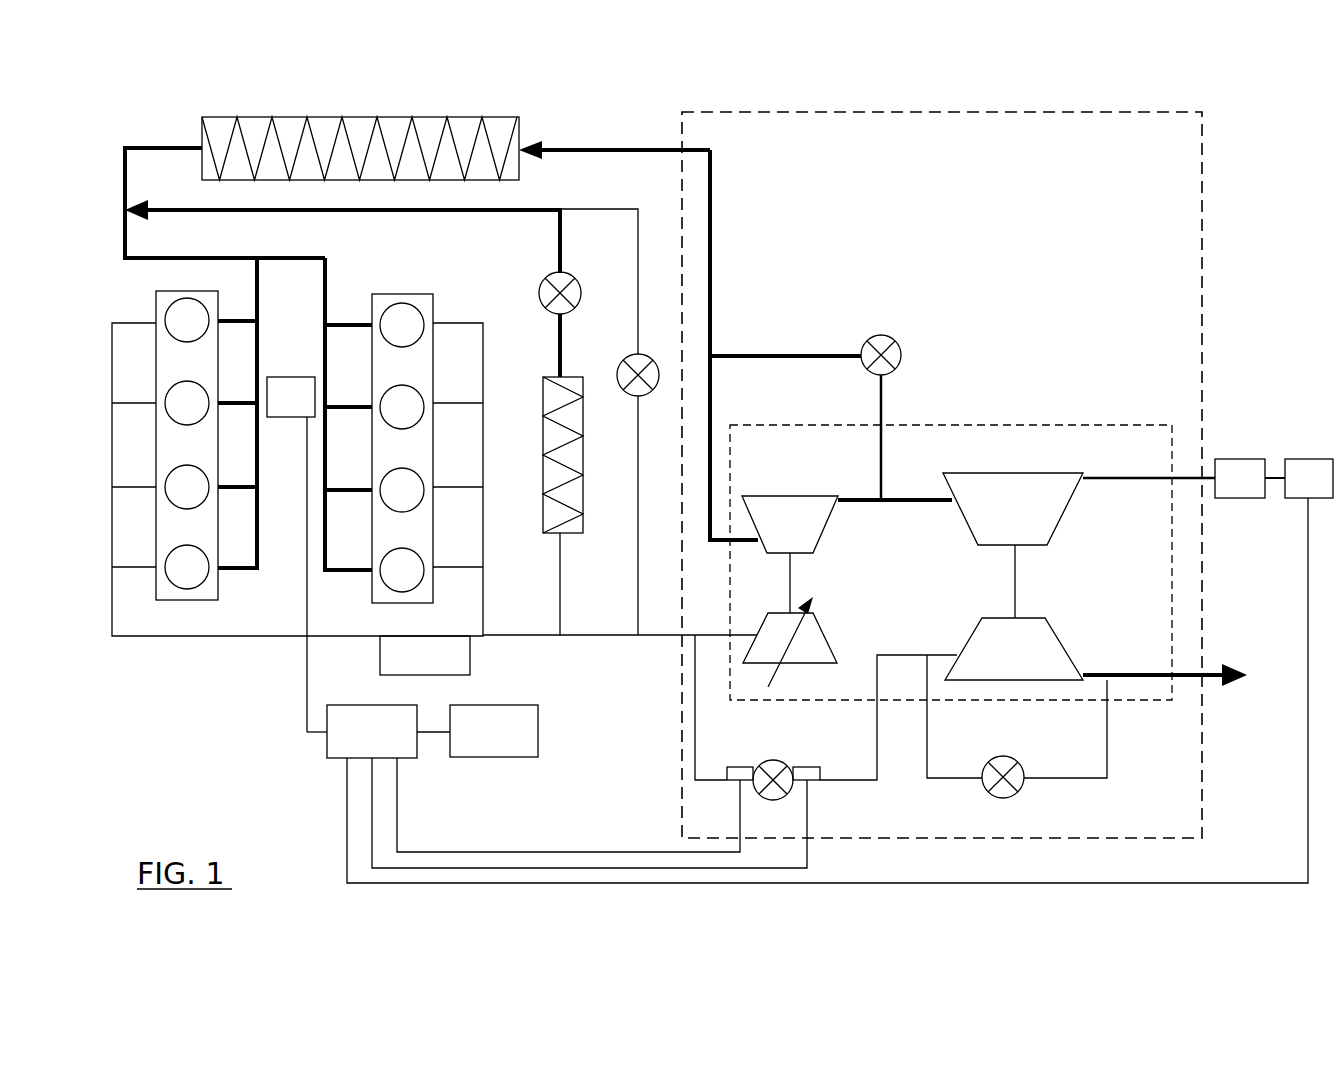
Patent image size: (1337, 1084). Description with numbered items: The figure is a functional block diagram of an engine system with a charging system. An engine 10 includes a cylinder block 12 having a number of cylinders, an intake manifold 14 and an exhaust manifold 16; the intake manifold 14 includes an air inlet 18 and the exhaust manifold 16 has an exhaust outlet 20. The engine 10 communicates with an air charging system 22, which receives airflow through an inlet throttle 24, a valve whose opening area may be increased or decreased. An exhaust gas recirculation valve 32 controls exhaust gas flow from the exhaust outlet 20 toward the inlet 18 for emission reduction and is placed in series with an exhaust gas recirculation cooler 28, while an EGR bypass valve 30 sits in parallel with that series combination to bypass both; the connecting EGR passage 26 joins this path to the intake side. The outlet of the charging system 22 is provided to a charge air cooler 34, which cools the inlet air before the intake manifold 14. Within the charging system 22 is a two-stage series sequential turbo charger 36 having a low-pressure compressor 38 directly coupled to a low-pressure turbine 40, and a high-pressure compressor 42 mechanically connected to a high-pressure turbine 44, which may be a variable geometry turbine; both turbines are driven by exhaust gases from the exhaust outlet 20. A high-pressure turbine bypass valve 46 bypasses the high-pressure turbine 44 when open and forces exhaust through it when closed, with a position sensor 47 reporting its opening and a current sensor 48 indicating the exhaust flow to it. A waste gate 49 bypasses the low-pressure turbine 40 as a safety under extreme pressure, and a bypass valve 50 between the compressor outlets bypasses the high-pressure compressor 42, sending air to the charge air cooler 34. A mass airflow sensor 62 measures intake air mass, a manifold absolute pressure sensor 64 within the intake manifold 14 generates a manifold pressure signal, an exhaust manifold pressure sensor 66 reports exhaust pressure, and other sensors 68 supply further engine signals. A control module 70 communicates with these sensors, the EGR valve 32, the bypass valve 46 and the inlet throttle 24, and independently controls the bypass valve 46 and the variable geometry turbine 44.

The engine 10 is at (136, 668).
The cylinder block 12 is at (156, 292).
The intake manifold 14 is at (304, 258).
The exhaust manifold 16 is at (112, 350).
The air inlet 18 is at (184, 258).
The exhaust outlet 20 is at (525, 635).
The air charging system 22 is at (918, 112).
The inlet throttle 24 is at (1238, 459).
The EGR line 26 is at (564, 240).
The exhaust gas recirculation cooler 28 is at (575, 535).
The EGR bypass valve 30 is at (647, 355).
The exhaust gas recirculation valve 32 is at (581, 293).
The charge air cooler 34 is at (437, 117).
The two-stage series sequential turbo charger 36 is at (1104, 425).
The low-pressure compressor 38 is at (968, 473).
The low-pressure turbine 40 is at (1033, 618).
The high-pressure compressor 42 is at (829, 520).
The high-pressure turbine 44 is at (773, 613).
The high-pressure turbine bypass valve 46 is at (773, 760).
The position sensor 47 is at (745, 767).
The current sensor 48 is at (813, 767).
The waste gate 49 is at (1016, 793).
The bypass valve 50 is at (902, 352).
The mass airflow sensor 62 is at (1305, 459).
The manifold absolute pressure sensor 64 is at (288, 417).
The exhaust manifold pressure sensor 66 is at (380, 652).
The other sensors 68 is at (492, 757).
The control module 70 is at (327, 745).